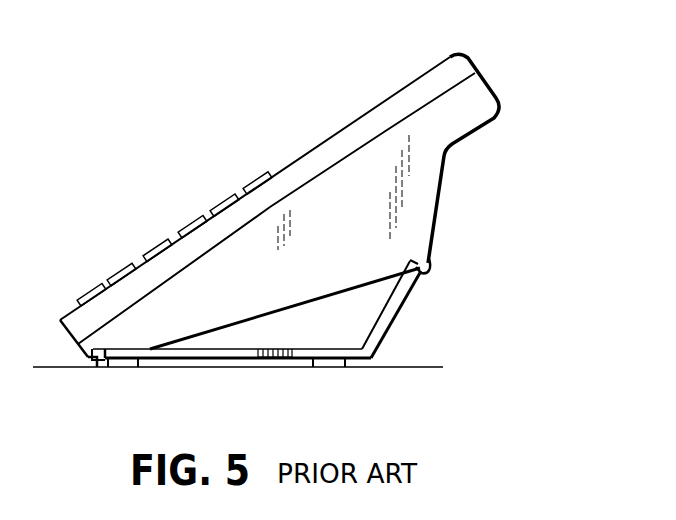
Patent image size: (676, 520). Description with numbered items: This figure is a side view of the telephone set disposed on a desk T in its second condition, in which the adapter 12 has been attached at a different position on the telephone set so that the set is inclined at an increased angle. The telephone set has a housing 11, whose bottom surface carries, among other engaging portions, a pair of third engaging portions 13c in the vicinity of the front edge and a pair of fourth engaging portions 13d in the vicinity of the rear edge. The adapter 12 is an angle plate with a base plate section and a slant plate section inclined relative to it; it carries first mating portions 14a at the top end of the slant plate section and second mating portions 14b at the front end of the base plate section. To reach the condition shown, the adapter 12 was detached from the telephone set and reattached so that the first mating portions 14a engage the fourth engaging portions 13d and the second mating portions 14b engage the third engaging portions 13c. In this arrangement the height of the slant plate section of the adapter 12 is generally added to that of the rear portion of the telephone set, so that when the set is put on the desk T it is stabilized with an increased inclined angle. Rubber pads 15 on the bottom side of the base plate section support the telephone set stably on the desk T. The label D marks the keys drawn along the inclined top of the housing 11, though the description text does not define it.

The housing 11 is at (460, 112).
The keys D is at (174, 229).
The adapter 12 is at (392, 323).
The third engaging portions 13c is at (98, 368).
The fourth engaging portions 13d is at (426, 268).
The first mating portions 14a is at (411, 276).
The second mating portions 14b is at (108, 370).
The rubber pads 15 is at (333, 367).
The desk T is at (430, 366).